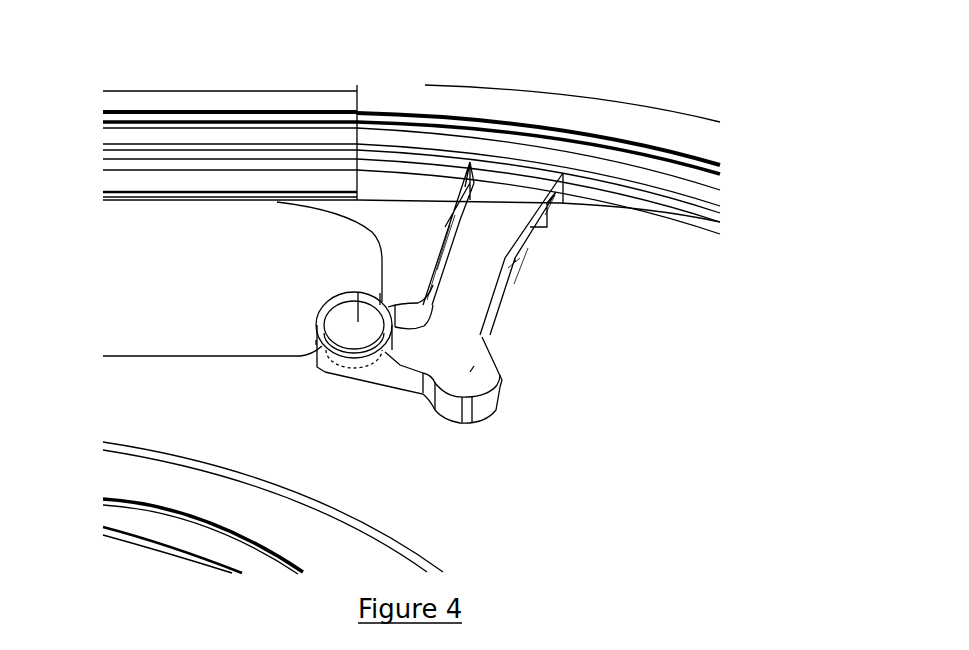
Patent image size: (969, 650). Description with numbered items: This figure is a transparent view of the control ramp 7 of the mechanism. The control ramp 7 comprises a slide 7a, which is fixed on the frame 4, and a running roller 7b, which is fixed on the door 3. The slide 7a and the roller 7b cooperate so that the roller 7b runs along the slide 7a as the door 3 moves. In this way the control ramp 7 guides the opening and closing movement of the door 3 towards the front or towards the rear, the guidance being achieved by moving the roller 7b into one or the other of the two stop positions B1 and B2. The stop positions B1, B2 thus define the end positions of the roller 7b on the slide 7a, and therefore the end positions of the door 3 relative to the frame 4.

The frame 4 is at (638, 140).
The control ramp 7 is at (378, 212).
The slide 7a is at (517, 238).
The running roller 7b is at (347, 315).
The stop position B1 is at (325, 318).
The stop position B2 is at (472, 372).
The door 3 is at (627, 443).